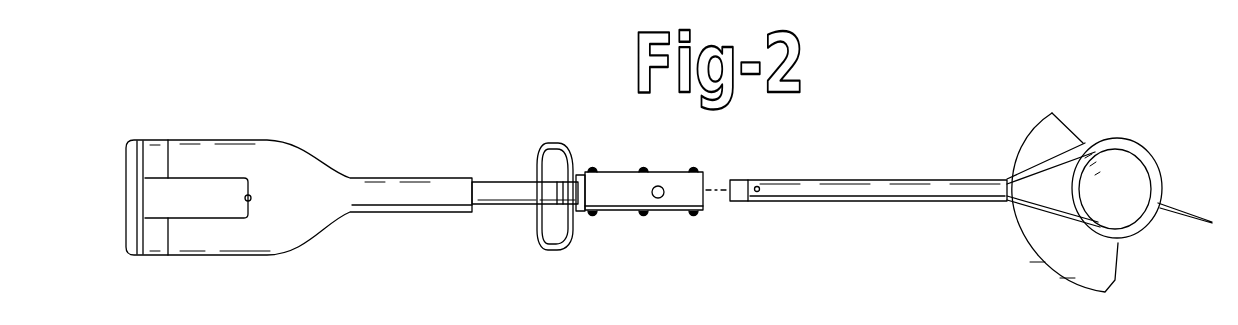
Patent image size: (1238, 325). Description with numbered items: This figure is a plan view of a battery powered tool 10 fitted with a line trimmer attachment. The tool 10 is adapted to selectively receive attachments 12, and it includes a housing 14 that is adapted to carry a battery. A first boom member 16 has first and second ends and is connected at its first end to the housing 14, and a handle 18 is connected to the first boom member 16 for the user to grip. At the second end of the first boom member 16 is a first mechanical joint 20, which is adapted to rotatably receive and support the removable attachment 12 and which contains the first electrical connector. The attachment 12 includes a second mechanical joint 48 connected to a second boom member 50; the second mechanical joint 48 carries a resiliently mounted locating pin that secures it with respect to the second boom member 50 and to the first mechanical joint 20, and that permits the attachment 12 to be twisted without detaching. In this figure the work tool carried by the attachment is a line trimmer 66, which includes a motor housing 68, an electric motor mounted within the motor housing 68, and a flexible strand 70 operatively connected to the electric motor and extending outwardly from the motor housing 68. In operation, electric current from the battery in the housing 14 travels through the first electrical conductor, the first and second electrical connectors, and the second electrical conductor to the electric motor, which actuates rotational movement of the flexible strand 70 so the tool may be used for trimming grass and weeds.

The battery powered tool 10 is at (180, 103).
The attachment 12 is at (955, 125).
The housing 14 is at (178, 140).
The first boom member 16 is at (497, 206).
The handle 18 is at (537, 156).
The first mechanical joint 20 is at (661, 212).
The second mechanical joint 48 is at (740, 203).
The second boom member 50 is at (897, 203).
The line trimmer 66 is at (1157, 137).
The motor housing 68 is at (1045, 203).
The flexible strand 70 is at (1186, 223).